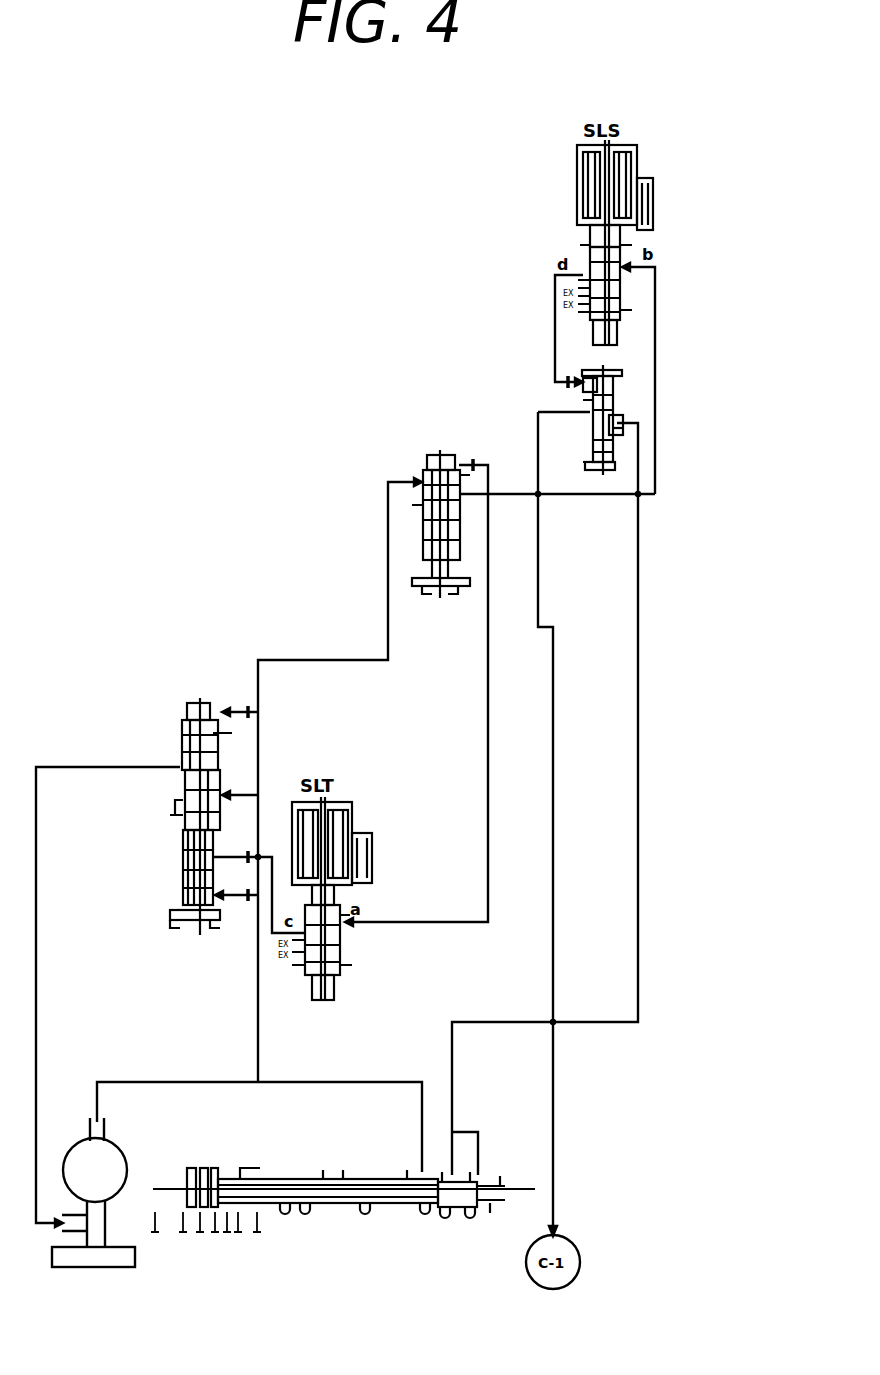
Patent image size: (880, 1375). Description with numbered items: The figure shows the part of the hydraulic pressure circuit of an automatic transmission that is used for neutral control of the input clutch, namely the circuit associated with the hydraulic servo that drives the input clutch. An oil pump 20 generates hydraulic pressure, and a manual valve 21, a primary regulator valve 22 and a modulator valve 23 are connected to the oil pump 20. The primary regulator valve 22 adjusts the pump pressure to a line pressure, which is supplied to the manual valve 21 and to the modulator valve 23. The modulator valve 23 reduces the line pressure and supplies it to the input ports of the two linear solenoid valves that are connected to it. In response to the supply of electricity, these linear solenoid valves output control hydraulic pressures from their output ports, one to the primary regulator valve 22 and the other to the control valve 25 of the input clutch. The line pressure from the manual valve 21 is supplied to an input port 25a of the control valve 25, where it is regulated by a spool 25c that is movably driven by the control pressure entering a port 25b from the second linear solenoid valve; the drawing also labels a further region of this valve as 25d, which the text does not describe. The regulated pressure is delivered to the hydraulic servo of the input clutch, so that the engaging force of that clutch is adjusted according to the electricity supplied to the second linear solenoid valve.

The oil pump 20 is at (127, 1153).
The manual valve 21 is at (289, 1152).
The primary regulator valve 22 is at (158, 721).
The modulator valve 23 is at (430, 452).
The C1 control valve 25 is at (603, 396).
The input port 25a is at (625, 421).
The port 25b is at (583, 379).
The spool 25c is at (616, 431).
The feedback port of control valve 25d is at (588, 454).